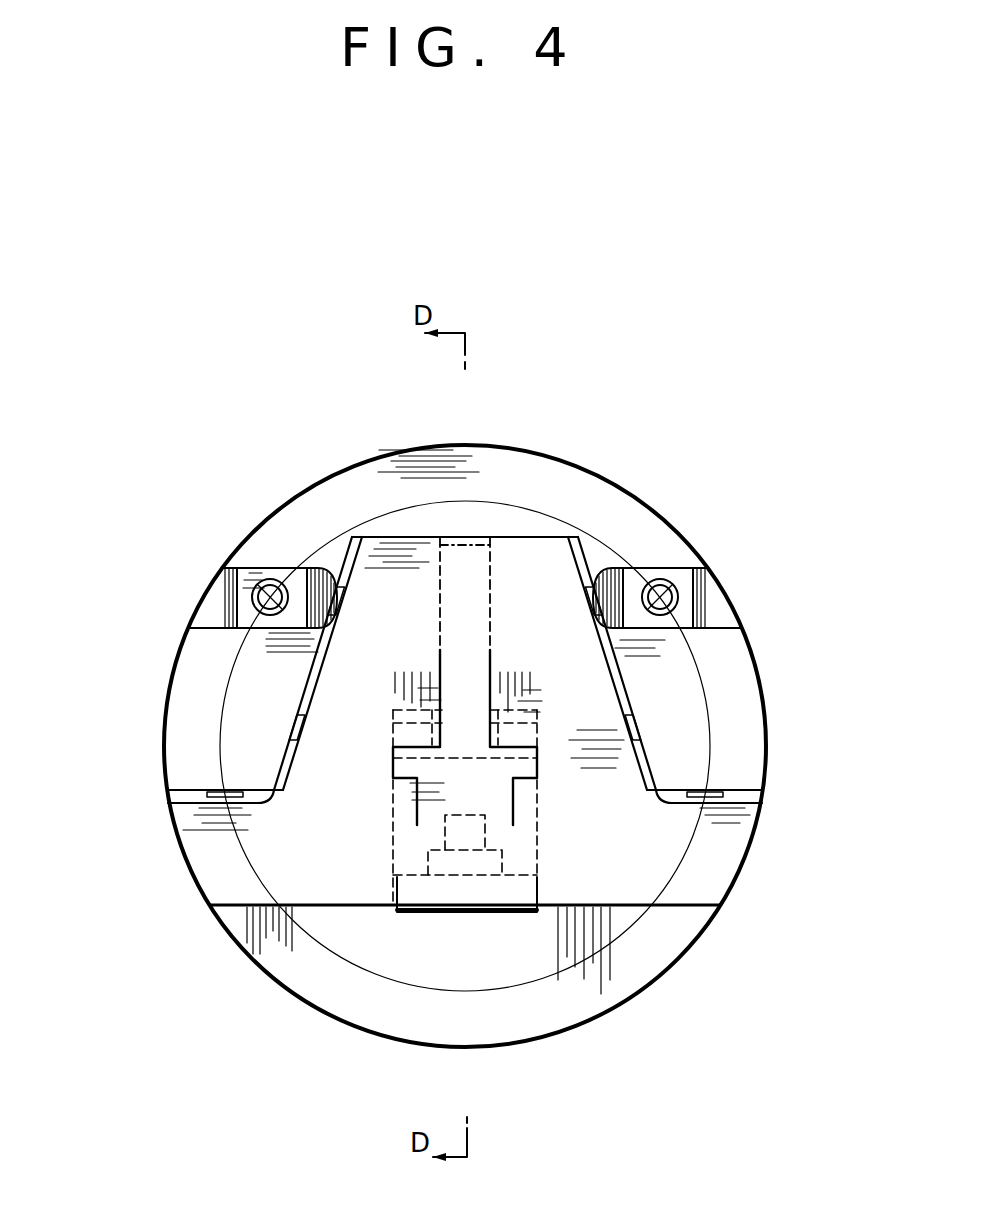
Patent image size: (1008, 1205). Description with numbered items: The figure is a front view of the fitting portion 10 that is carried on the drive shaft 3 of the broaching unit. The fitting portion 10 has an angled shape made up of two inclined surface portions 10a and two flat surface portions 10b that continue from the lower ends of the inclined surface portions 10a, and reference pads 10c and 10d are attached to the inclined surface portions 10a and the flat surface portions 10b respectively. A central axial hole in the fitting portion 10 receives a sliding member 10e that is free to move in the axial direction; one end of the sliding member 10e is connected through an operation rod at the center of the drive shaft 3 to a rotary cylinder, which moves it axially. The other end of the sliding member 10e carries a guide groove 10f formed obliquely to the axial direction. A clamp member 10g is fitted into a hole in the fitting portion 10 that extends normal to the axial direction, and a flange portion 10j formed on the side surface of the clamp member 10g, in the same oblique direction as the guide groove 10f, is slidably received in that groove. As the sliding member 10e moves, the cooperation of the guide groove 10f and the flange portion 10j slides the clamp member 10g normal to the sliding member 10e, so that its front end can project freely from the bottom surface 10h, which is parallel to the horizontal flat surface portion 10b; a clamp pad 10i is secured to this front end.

The drive shaft 3 is at (690, 843).
The fitting portion 10 is at (632, 882).
The inclined surface portions 10a is at (307, 683).
The flat surface portions 10b is at (235, 787).
The reference pads 10c is at (345, 567).
The reference pads 10d is at (183, 800).
The sliding member 10e is at (510, 683).
The guide groove 10f is at (397, 747).
The clamp member 10g is at (498, 810).
The bottom surface 10h is at (303, 913).
The clamp pad 10i is at (423, 913).
The flange portion 10j is at (395, 763).